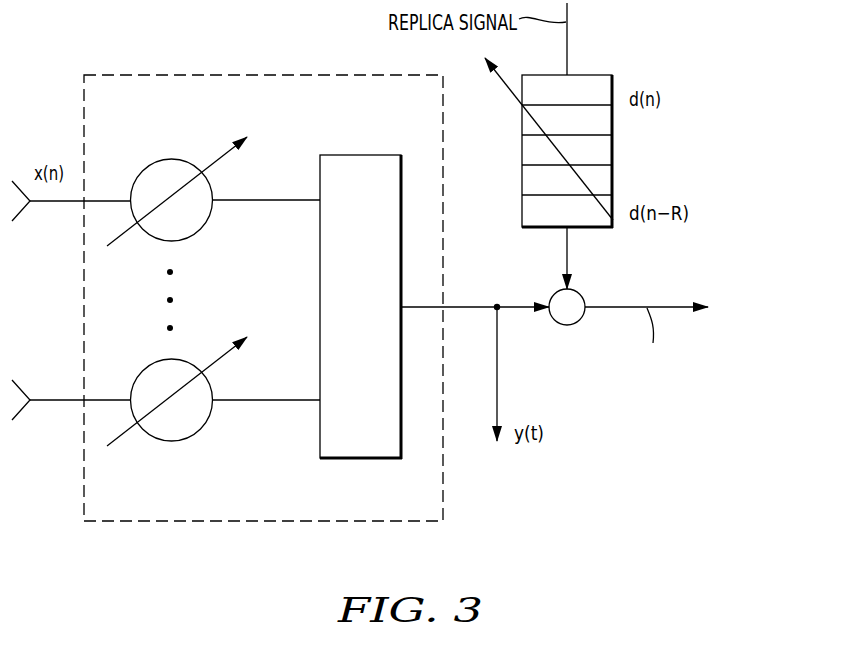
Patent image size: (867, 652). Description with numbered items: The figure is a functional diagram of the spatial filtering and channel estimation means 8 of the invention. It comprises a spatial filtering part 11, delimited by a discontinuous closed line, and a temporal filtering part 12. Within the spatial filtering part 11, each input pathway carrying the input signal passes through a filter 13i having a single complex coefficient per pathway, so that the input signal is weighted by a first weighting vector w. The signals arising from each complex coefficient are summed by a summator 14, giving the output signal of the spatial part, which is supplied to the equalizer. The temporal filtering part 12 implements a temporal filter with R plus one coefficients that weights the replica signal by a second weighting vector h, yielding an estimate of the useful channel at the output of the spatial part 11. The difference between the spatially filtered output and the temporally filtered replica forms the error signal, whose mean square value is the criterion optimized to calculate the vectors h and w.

The spatial filtering and channel estimation means 8 is at (674, 171).
The spatial filtering part 11 is at (146, 74).
The temporal filtering part 12 is at (595, 75).
The filter 13i is at (204, 226).
The summator 14 is at (362, 460).